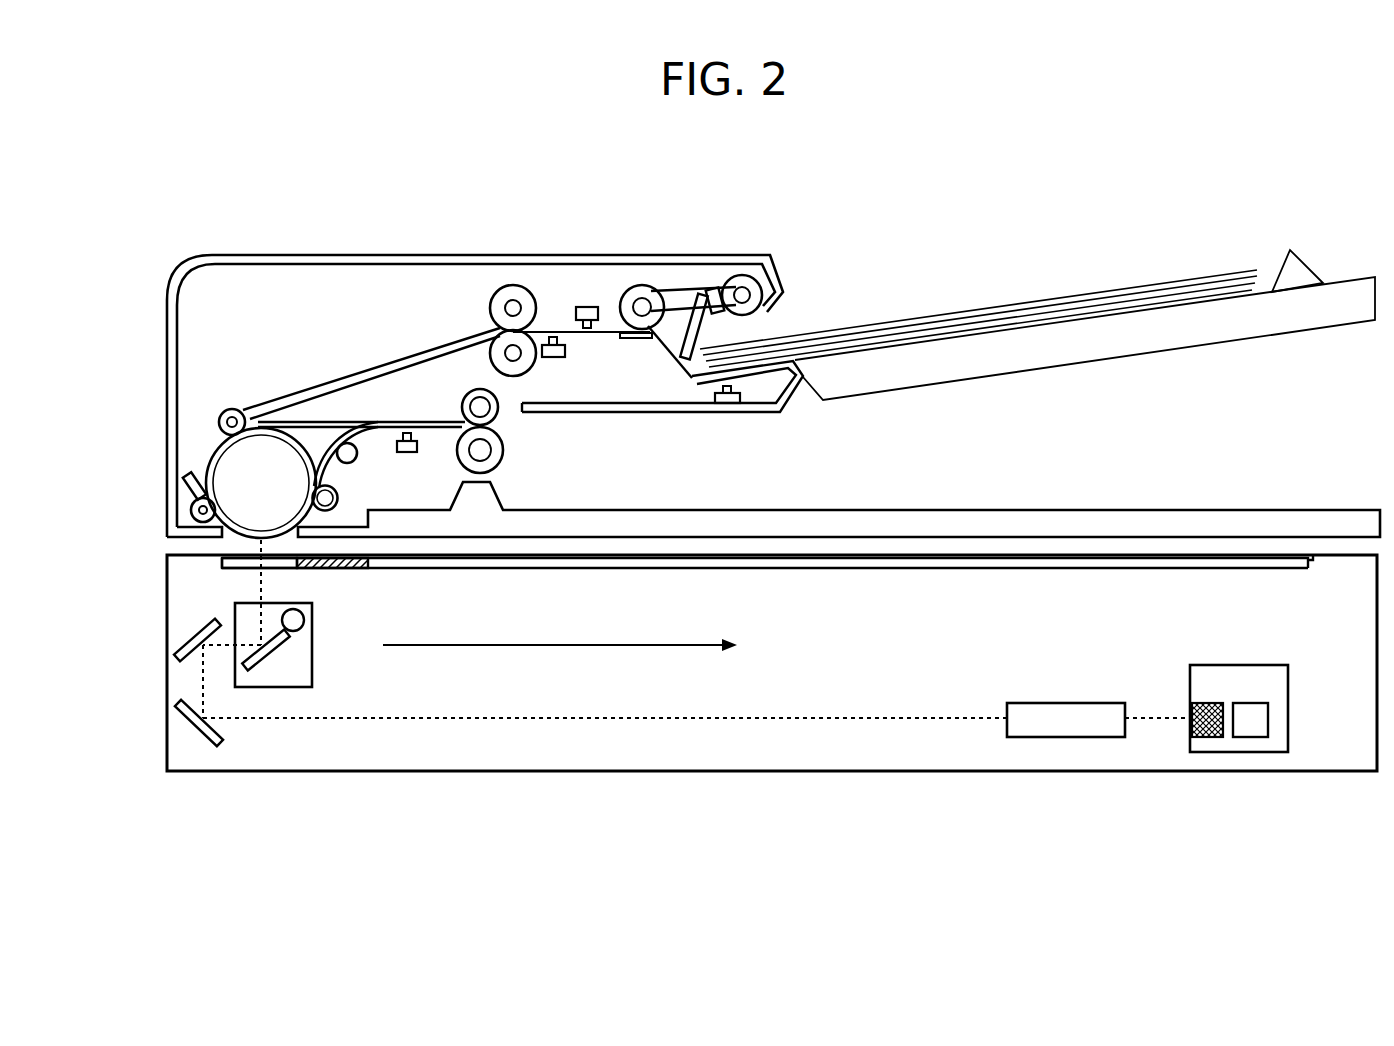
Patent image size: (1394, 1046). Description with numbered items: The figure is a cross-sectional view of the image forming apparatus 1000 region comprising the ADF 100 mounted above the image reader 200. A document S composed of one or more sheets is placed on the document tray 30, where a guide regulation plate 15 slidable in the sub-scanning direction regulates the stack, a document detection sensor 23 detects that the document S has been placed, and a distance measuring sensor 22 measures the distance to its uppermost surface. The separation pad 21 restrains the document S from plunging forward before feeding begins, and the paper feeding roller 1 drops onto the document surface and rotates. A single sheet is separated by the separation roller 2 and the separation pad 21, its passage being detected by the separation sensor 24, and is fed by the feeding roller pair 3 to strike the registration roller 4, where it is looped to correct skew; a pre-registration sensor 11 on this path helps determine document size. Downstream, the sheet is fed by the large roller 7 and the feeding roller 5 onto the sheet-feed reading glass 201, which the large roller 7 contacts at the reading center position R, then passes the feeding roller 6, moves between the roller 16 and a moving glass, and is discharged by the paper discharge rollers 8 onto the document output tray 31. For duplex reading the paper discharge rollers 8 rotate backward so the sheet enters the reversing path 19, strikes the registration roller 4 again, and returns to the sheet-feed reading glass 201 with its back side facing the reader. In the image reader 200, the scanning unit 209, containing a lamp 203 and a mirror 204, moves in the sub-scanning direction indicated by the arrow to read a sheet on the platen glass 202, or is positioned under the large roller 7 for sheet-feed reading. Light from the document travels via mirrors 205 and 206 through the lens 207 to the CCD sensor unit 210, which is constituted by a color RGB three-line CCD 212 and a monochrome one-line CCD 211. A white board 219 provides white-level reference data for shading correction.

The image forming apparatus 1000 is at (721, 199).
The automatic document feeder 100 is at (498, 254).
The image reader 200 is at (507, 772).
The paper feeding roller 1 is at (750, 280).
The separation roller 2 is at (641, 287).
The feeding roller pair 3 is at (498, 305).
The registration roller 4 is at (228, 408).
The feeding roller 5 is at (192, 516).
The feeding roller 6 is at (338, 497).
The large roller 7 is at (235, 465).
The paper discharge rollers 8 is at (500, 447).
The pre-registration sensor 11 is at (553, 360).
The guide regulation plate 15 is at (1310, 262).
The roller 16 is at (357, 453).
The reversing path 19 is at (350, 421).
The separation pad 21 is at (637, 337).
The distance measuring sensor 22 is at (718, 288).
The document detection sensor 23 is at (703, 293).
The separation sensor 24 is at (587, 306).
The document tray 30 is at (1105, 350).
The document output tray 31 is at (738, 508).
The sheet-feed reading glass 201 is at (240, 562).
The platen glass 202 is at (527, 568).
The lamp 203 is at (304, 620).
The mirror 204 is at (275, 655).
The mirror 205 is at (183, 647).
The mirror 206 is at (192, 722).
The lens 207 is at (1052, 703).
The scanning unit 209 is at (312, 673).
The CCD sensor unit 210 is at (1233, 665).
The monochrome image reading CCD 211 is at (1208, 739).
The color image reading CCD 212 is at (1253, 739).
The white board 219 is at (353, 570).
The document S is at (1016, 304).
The reading position R is at (270, 510).